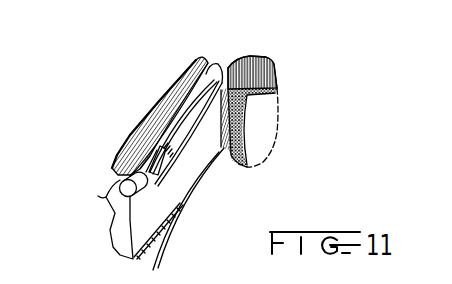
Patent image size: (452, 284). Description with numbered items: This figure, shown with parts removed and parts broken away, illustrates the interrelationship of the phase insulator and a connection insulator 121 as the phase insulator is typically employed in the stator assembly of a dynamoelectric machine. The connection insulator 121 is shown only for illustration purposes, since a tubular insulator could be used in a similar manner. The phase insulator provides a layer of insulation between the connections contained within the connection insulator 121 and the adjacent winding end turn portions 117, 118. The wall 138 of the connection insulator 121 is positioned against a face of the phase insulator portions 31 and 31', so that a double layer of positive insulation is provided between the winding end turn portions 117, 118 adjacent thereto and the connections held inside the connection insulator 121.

The winding end turn portion 118 is at (167, 86).
The connection insulator 121 is at (210, 78).
The phase insulator portion 31 is at (201, 51).
The winding end turn portion 117 is at (271, 68).
The wall 138 is at (125, 191).
The phase insulator portion 31' is at (97, 219).